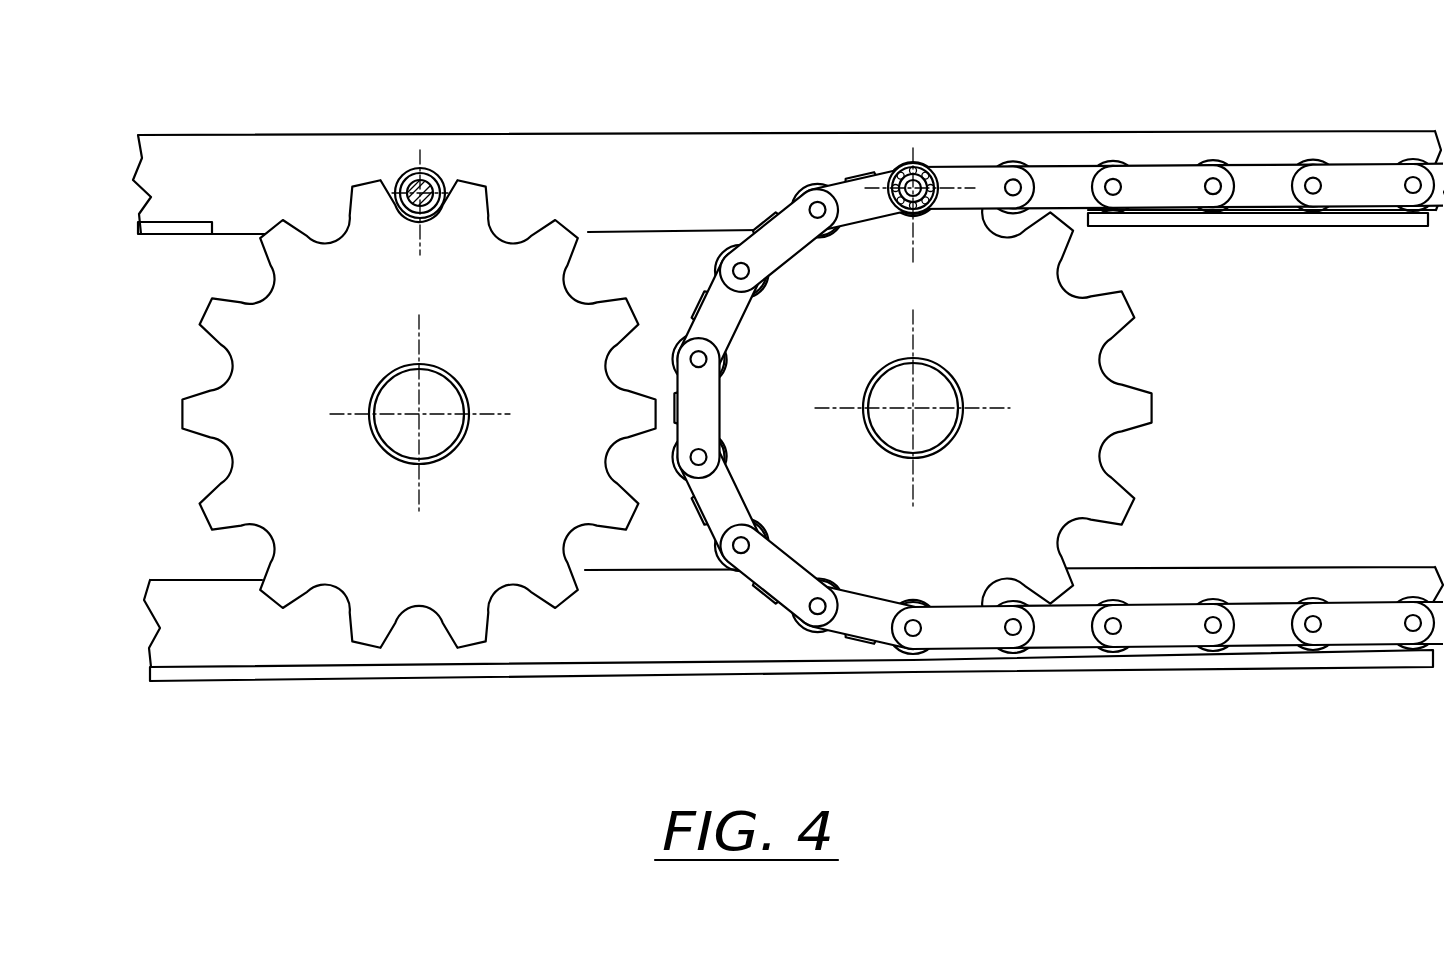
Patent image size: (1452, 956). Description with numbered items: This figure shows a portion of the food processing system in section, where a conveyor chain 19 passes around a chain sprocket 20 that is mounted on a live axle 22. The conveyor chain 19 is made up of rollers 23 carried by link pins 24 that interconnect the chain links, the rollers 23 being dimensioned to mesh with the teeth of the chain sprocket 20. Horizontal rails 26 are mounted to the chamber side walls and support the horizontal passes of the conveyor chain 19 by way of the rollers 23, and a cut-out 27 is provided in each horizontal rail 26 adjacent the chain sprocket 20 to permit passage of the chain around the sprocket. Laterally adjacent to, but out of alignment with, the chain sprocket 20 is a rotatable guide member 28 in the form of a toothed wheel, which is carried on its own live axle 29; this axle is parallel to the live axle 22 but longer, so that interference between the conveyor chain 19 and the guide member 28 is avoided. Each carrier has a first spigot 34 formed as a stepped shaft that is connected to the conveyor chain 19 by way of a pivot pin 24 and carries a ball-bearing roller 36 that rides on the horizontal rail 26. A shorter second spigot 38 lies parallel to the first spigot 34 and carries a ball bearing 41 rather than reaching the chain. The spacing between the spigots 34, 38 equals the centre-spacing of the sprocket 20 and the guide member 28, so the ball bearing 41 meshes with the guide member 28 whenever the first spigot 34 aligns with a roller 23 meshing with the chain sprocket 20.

The conveyor chain 19 is at (1063, 343).
The chain sprocket 20 is at (955, 408).
The live axle 22 is at (945, 428).
The roller 23 is at (803, 194).
The link pin 24 is at (1258, 200).
The horizontal rail 26 is at (195, 234).
The cut-out 27 is at (218, 233).
The rotatable guide member 28 is at (420, 414).
The live axle 29 is at (440, 440).
The first spigot 34 is at (925, 157).
The roller 36 is at (897, 164).
The second spigot 38 is at (427, 156).
The ball bearing 41 is at (407, 172).